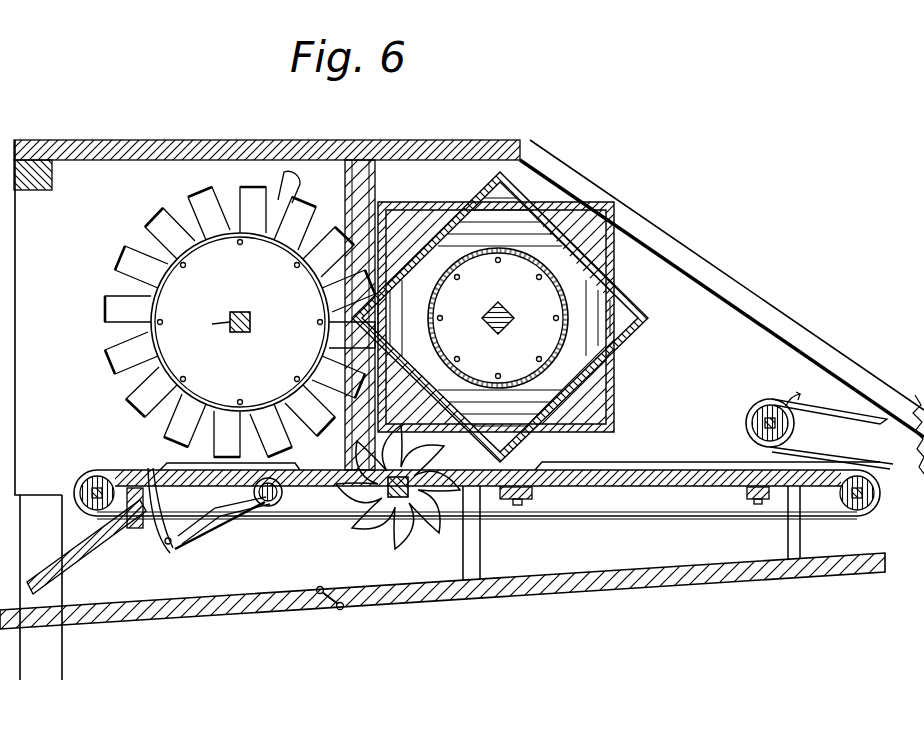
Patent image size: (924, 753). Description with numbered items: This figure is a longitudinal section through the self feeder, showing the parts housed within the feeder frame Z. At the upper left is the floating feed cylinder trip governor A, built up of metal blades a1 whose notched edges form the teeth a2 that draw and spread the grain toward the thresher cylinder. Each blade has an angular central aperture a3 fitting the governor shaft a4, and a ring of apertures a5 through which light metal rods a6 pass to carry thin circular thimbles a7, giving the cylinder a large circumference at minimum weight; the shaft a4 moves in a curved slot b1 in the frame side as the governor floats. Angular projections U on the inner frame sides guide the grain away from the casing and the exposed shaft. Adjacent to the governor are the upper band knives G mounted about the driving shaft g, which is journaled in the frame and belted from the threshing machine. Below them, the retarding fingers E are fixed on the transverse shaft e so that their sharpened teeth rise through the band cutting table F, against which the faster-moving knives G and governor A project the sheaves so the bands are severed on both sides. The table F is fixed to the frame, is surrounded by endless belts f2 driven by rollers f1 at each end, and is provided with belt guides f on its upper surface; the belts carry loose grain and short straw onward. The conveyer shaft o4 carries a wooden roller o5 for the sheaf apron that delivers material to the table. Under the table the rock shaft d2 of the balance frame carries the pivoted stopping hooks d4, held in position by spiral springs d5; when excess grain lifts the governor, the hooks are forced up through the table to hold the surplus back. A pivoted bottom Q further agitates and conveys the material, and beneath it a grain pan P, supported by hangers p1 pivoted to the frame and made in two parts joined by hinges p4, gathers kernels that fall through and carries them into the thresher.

The feeder frame Z is at (54, 186).
The feed cylinder trip governor A is at (212, 314).
The metal blades a1 is at (240, 322).
The teeth a2 is at (240, 322).
The angular apertures a3 is at (250, 322).
The governor shaft a4 is at (208, 322).
The apertures a5 is at (294, 268).
The metal rods a6 is at (186, 268).
The metal thimbles a7 is at (150, 304).
The curved slot b1 is at (292, 188).
The angular projections U is at (376, 175).
The upper band knives G is at (502, 317).
The shaft g is at (508, 310).
The retarding fingers E is at (398, 487).
The transverse shaft e is at (388, 484).
The band cutting table F is at (466, 481).
The belt supporting plate f is at (266, 462).
The rollers f1 is at (88, 450).
The endless belts f2 is at (80, 500).
The conveyer shaft o4 is at (780, 428).
The wooden roller o5 is at (746, 424).
The rock shaft d2 is at (236, 518).
The stopping hooks d4 is at (156, 540).
The spiral springs d5 is at (178, 552).
The pivoted bottom Q is at (82, 560).
The grain pan P is at (520, 580).
The hangers p1 is at (480, 545).
The hinges p4 is at (322, 586).